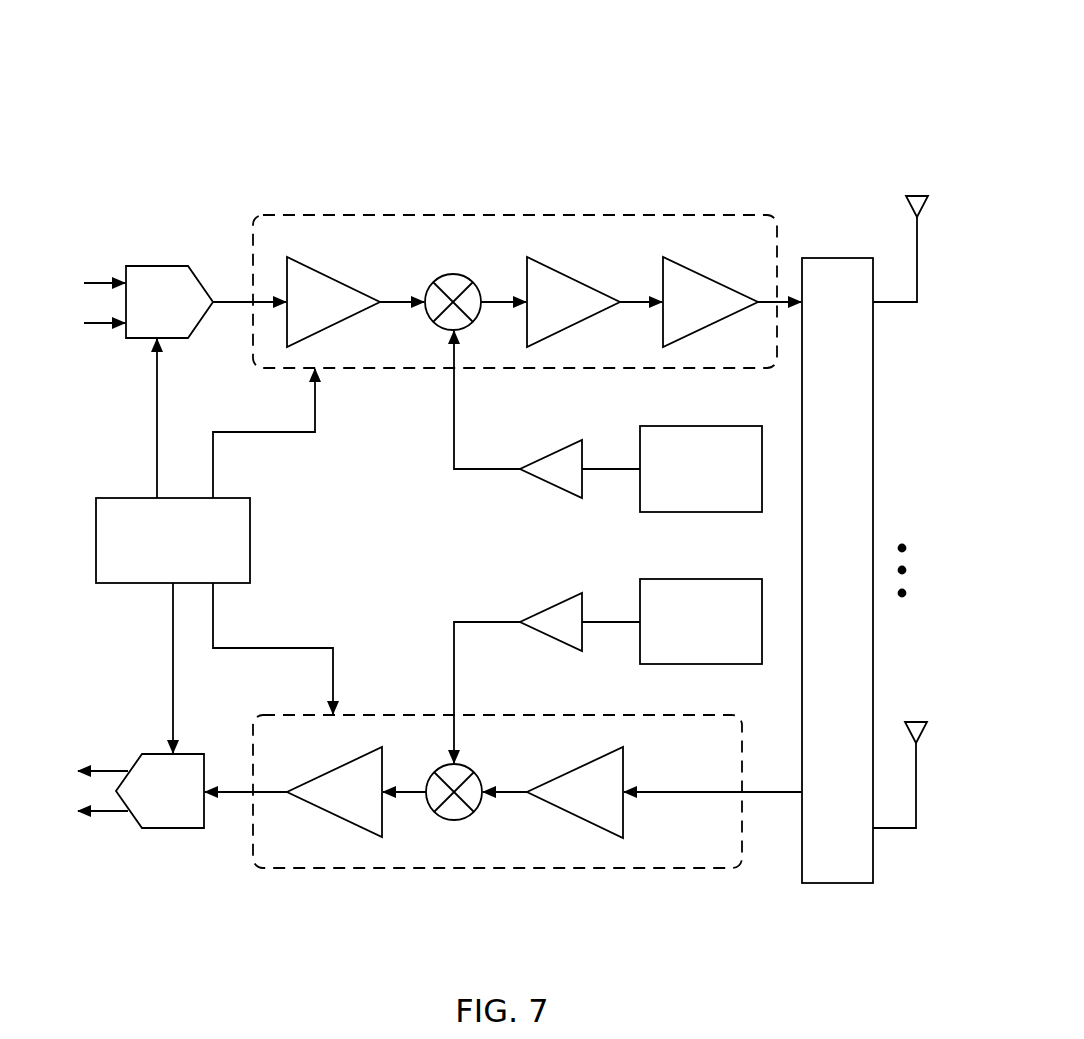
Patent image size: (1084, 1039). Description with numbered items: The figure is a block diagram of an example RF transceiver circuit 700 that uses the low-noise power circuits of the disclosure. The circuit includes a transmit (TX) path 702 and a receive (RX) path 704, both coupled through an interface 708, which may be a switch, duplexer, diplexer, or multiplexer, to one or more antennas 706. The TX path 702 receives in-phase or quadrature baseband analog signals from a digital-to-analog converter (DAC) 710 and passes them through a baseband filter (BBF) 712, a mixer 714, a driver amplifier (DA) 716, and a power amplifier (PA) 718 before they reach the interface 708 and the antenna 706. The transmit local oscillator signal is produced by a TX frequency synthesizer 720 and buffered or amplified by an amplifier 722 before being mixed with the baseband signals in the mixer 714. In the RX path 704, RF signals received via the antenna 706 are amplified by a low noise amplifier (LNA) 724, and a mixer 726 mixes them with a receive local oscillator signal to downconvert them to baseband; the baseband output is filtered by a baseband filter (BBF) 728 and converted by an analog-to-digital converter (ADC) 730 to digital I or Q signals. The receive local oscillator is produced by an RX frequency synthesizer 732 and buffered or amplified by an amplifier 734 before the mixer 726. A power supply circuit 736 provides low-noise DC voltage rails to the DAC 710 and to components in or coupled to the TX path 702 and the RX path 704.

The RF transceiver circuit 700 is at (220, 72).
The transmit (TX) path 702 is at (290, 214).
The receive (RX) path 704 is at (696, 715).
The antenna 706 is at (917, 195).
The interface 708 is at (838, 258).
The digital-to-analog converter (DAC) 710 is at (158, 266).
The baseband filter (BBF) 712 is at (348, 278).
The mixer 714 is at (456, 276).
The driver amplifier (DA) 716 is at (577, 281).
The power amplifier (PA) 718 is at (704, 283).
The TX frequency synthesizer 720 is at (722, 426).
The amplifier 722 is at (548, 456).
The low noise amplifier (LNA) 724 is at (637, 766).
The mixer 726 is at (472, 770).
The baseband filter (BBF) 728 is at (334, 769).
The analog-to-digital converter (ADC) 730 is at (147, 754).
The RX frequency synthesizer 732 is at (722, 579).
The amplifier 734 is at (548, 609).
The power supply circuit 736 is at (126, 498).